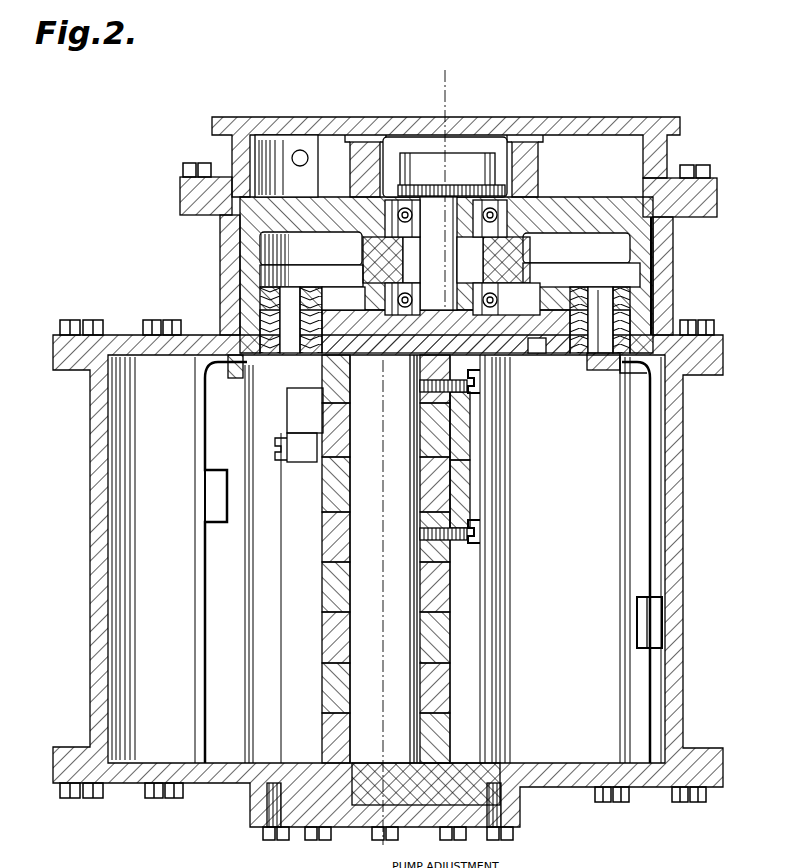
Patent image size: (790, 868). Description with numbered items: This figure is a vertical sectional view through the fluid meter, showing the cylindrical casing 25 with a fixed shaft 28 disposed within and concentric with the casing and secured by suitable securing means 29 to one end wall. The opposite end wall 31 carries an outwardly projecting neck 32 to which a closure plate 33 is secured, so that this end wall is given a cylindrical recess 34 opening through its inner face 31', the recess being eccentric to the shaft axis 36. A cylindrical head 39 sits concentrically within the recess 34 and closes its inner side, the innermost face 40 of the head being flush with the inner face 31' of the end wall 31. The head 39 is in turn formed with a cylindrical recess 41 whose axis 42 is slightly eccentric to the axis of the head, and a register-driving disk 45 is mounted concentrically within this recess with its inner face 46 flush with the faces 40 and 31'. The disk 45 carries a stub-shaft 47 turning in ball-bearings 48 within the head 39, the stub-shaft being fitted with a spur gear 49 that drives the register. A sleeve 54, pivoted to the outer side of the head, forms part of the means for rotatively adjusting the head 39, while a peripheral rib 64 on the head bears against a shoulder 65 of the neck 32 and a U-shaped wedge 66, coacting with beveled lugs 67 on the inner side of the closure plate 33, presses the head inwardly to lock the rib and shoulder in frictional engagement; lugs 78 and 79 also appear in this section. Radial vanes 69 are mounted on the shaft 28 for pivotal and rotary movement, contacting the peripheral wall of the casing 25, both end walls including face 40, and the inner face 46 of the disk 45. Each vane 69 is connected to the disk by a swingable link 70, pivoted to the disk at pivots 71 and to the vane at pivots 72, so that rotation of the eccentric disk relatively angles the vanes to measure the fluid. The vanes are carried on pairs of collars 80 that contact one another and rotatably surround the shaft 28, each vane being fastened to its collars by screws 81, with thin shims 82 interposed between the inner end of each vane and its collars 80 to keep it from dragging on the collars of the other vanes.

The cylindrical casing 25 is at (678, 512).
The fixed shaft 28 is at (368, 639).
The securing means 29 is at (518, 830).
The end wall 31 is at (386, 560).
The inner face of end wall 31' is at (401, 391).
The neck 32 is at (230, 283).
The closure plate 33 is at (682, 122).
The cylindrical recess 34 is at (228, 310).
The shaft axis 36 is at (374, 685).
The cylindrical head 39 is at (593, 213).
The innermost face of head 40 is at (236, 357).
The cylindrical recess 41 is at (623, 277).
The axis of recess 42 is at (448, 122).
The register-driving disk 45 is at (337, 322).
The inner face of disk 46 is at (562, 367).
The stub-shaft 47 is at (453, 261).
The ball-bearings 48 is at (540, 192).
The spur gear 49 is at (500, 188).
The sleeve 54 is at (287, 158).
The peripheral rib 64 is at (220, 223).
The shoulder 65 is at (220, 232).
The U-shaped wedge 66 is at (360, 143).
The beveled lugs 67 is at (372, 143).
The radial vanes 69 is at (262, 581).
The swingable links 70 is at (292, 383).
The pivots 71 is at (281, 358).
The pivots 72 is at (307, 435).
The lug 78 is at (207, 495).
The lug 79 is at (642, 634).
The collars 80 is at (437, 487).
The screws 81 is at (471, 403).
The thin shims 82 is at (468, 407).